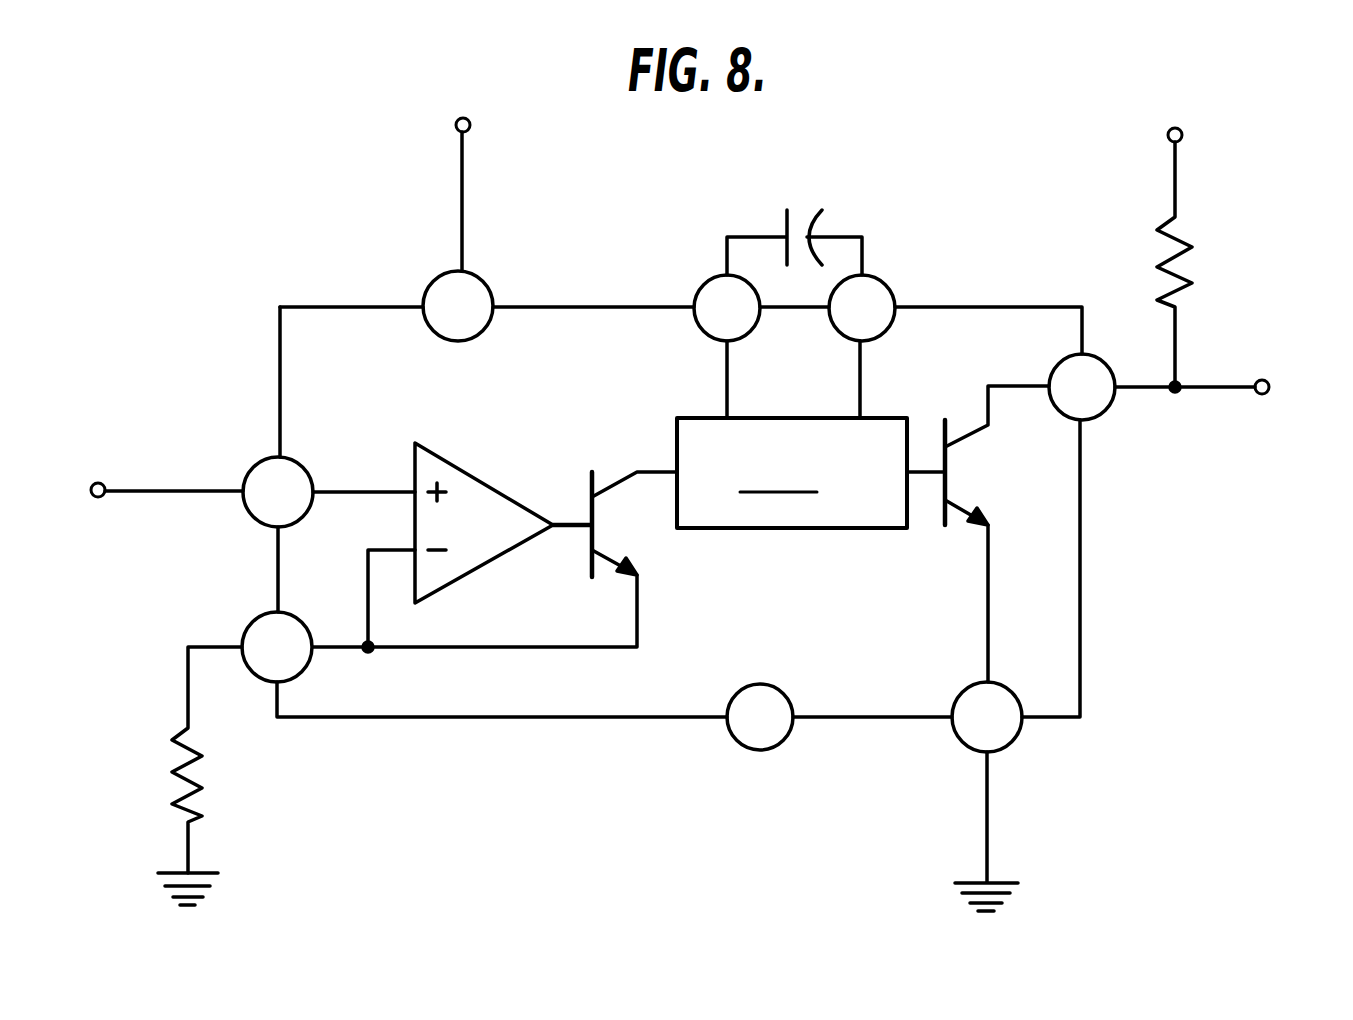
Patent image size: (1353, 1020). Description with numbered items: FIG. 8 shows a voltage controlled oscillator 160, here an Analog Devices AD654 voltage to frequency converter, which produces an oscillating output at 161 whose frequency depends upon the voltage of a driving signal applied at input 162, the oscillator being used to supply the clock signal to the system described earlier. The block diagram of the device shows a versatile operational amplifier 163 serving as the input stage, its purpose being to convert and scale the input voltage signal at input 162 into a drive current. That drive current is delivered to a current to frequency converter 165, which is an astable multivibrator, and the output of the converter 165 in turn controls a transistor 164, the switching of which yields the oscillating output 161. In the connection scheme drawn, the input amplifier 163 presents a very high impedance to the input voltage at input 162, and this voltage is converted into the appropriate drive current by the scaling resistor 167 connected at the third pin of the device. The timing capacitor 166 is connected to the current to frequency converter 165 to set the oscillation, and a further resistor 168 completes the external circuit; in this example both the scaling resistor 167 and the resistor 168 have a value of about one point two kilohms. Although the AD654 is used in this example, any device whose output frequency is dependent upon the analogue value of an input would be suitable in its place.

The voltage controlled oscillator 160 is at (338, 263).
The oscillating output 161 is at (1262, 370).
The input 162 is at (100, 483).
The operational amplifier 163 is at (460, 475).
The transistor 164 is at (958, 477).
The current to frequency converter 165 is at (811, 434).
The timing capacitor 166 is at (803, 210).
The scaling resistor 167 is at (192, 780).
The resistor 168 is at (1180, 270).